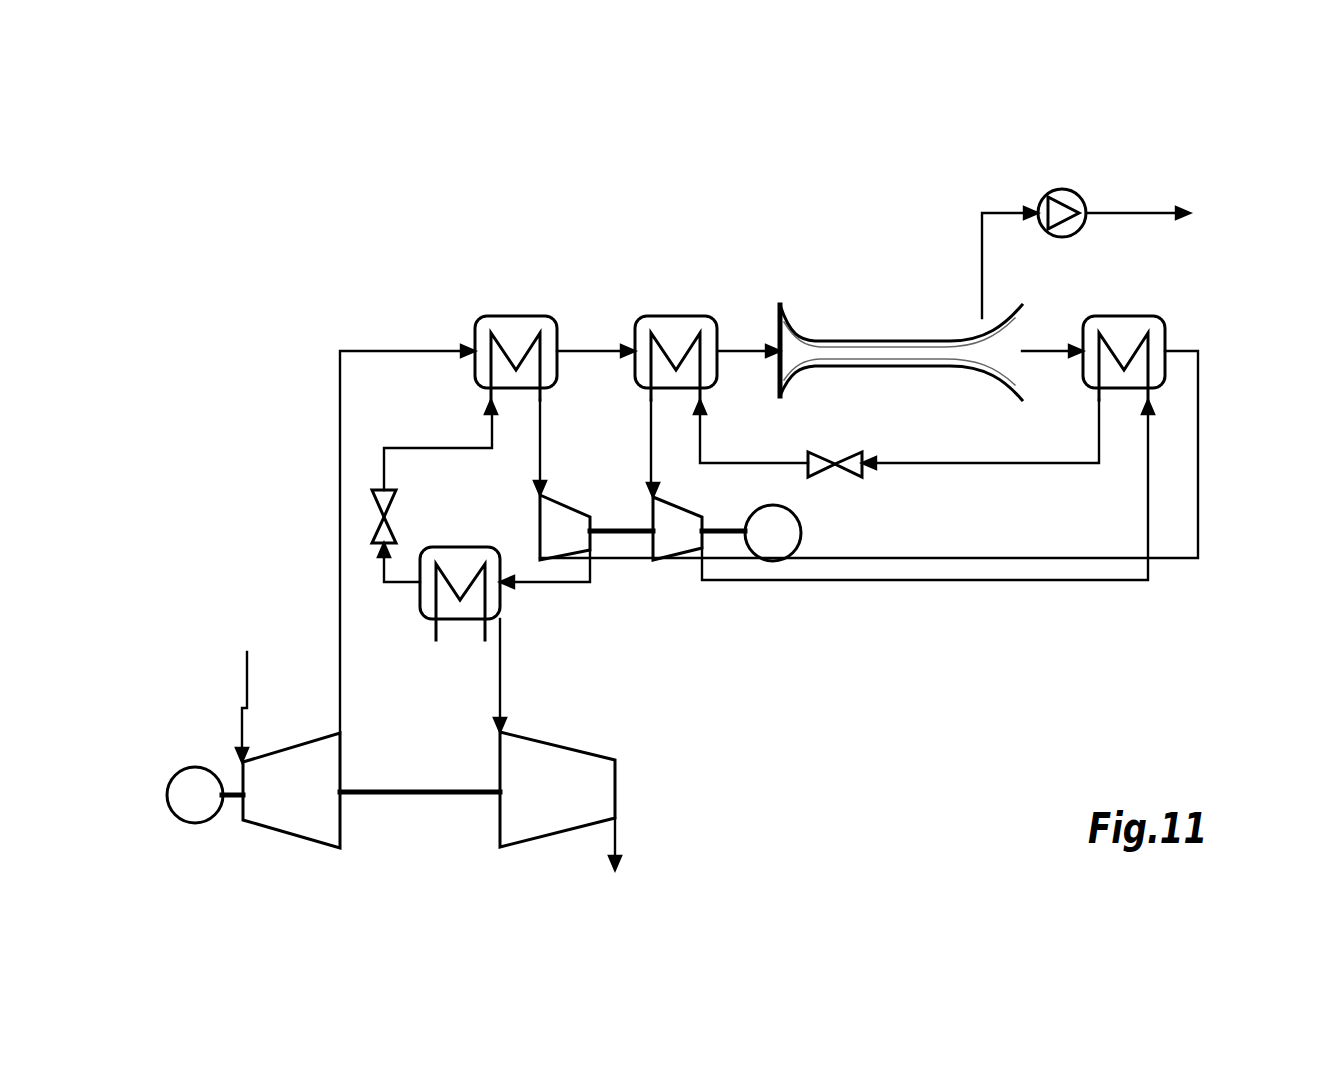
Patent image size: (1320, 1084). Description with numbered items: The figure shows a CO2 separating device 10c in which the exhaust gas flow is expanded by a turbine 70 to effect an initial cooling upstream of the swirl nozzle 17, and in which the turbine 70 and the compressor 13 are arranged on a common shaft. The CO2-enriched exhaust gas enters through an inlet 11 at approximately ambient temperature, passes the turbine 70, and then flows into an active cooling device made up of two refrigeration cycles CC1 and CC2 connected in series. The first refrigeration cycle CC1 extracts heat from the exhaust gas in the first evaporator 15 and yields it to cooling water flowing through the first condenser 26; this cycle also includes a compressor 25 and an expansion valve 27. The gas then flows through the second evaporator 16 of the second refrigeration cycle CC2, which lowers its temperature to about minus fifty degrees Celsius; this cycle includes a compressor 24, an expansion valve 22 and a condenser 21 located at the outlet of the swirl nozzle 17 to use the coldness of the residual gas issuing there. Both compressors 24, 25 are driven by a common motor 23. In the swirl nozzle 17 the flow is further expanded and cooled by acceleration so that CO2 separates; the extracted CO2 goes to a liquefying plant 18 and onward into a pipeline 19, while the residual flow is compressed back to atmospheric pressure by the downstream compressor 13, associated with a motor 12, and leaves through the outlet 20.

The CO2 separating device 10c is at (620, 238).
The inlet 11 is at (247, 652).
The motor 12 is at (195, 782).
The compressor 13 is at (575, 812).
The evaporator 15 is at (497, 330).
The evaporator 16 is at (680, 328).
The swirl nozzle 17 is at (883, 348).
The liquefying plant 18 is at (1068, 200).
The pipeline 19 is at (1145, 210).
The outlet 20 is at (1198, 378).
The condenser 21 is at (1118, 330).
The expansion valve 22 is at (818, 463).
The motor 23 is at (772, 540).
The compressor 24 is at (672, 540).
The compressor 25 is at (560, 545).
The condenser 26 is at (421, 618).
The expansion valve 27 is at (380, 500).
The turbine 70 is at (315, 817).
The refrigeration cycle CC1 is at (508, 519).
The refrigeration cycle CC2 is at (975, 542).